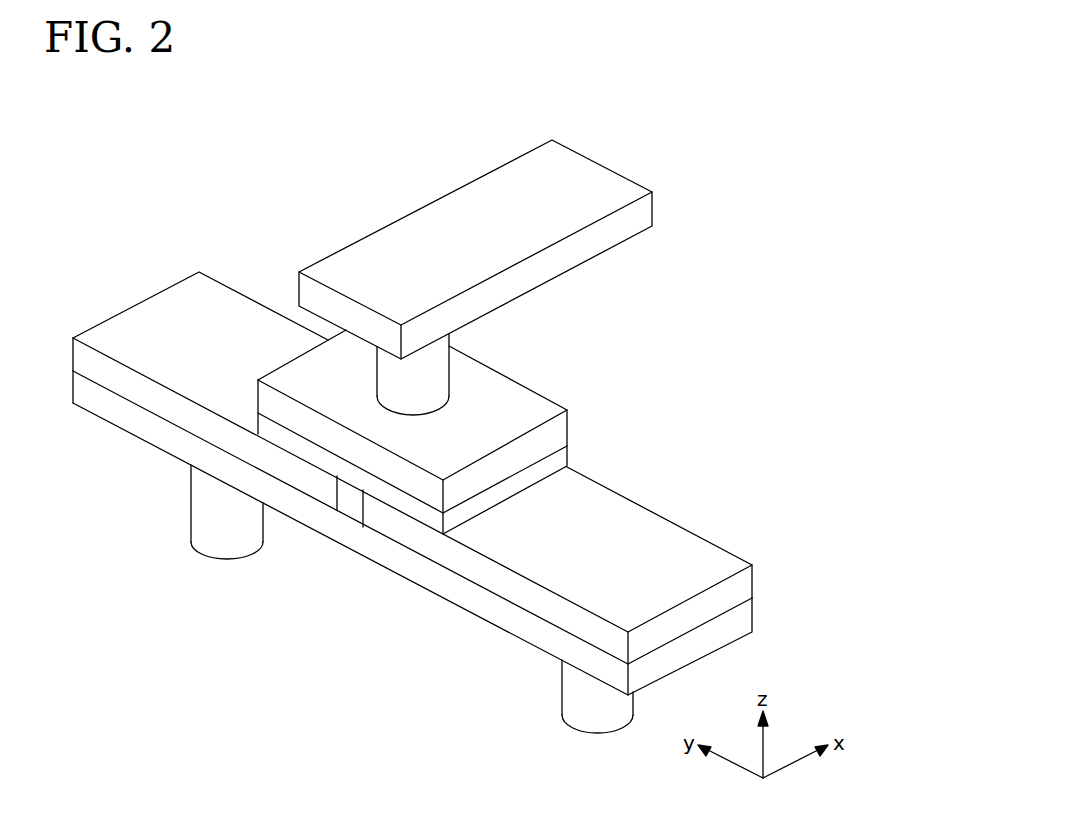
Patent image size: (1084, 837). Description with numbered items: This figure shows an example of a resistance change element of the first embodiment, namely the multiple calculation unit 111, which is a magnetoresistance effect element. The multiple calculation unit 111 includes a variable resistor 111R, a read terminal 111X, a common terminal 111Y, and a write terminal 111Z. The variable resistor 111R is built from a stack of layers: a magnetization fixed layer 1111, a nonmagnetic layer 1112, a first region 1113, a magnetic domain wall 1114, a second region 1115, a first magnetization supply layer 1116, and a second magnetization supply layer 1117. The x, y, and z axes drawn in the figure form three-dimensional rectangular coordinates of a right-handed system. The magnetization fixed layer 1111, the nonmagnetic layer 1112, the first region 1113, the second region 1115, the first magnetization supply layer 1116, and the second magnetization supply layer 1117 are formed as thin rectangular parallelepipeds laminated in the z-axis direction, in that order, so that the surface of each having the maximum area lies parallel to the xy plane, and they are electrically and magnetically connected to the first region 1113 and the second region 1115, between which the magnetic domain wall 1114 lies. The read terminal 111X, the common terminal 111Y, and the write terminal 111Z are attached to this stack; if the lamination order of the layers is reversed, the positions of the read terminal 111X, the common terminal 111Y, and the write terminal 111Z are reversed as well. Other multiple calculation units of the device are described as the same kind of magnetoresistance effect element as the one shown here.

The multiple calculation unit 111 is at (828, 149).
The read terminal 111X is at (641, 213).
The common terminal 111Y is at (562, 697).
The write terminal 111Z is at (231, 548).
The variable resistor 111R is at (878, 375).
The magnetization fixed layer 1111 is at (560, 446).
The nonmagnetic layer 1112 is at (558, 460).
The first region 1113 is at (358, 500).
The magnetic domain wall 1114 is at (322, 478).
The second region 1115 is at (642, 522).
The first magnetization supply layer 1116 is at (250, 481).
The second magnetization supply layer 1117 is at (753, 618).